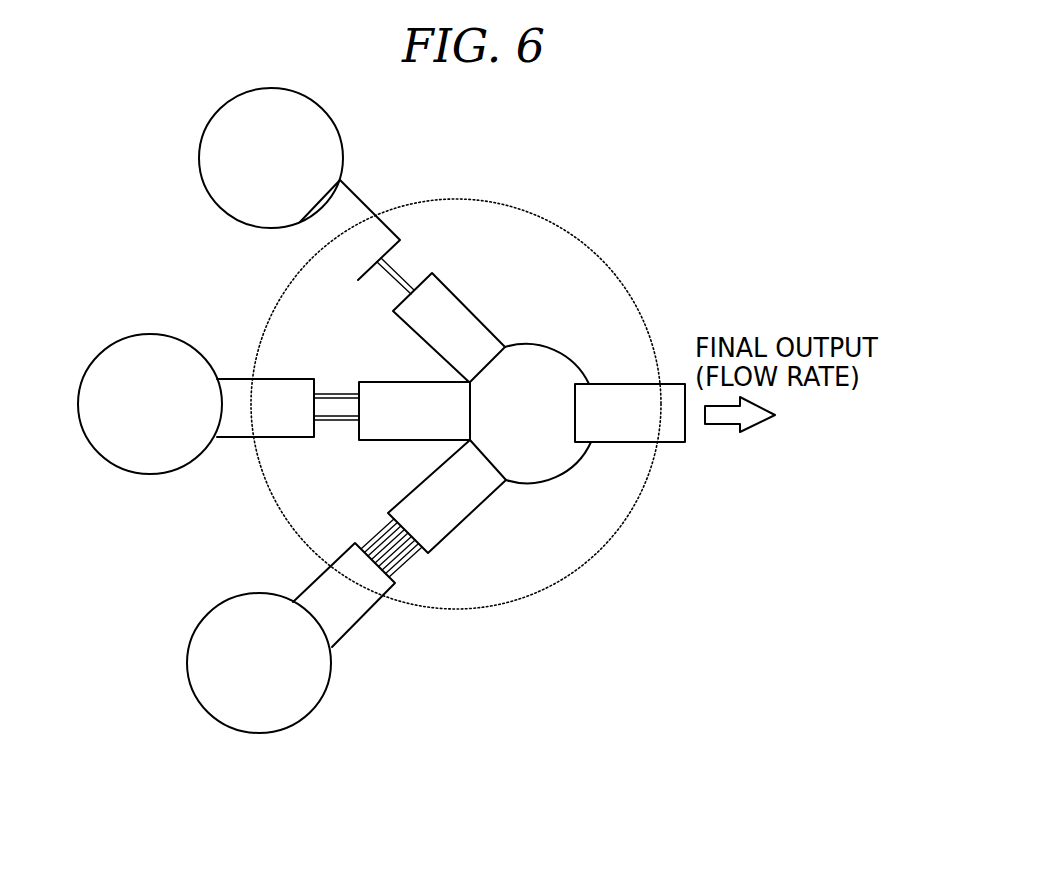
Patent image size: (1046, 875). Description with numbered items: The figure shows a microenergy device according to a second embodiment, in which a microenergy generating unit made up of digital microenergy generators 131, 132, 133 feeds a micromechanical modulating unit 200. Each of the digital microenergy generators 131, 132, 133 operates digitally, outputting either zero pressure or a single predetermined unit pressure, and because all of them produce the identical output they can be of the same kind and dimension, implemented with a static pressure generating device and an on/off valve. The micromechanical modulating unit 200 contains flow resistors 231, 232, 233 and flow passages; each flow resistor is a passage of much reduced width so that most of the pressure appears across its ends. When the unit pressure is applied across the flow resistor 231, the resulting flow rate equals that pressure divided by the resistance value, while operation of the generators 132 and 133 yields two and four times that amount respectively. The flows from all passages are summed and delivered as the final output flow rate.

The digital microenergy generator 131 is at (199, 141).
The digital microenergy generator 132 is at (178, 440).
The digital microenergy generator 133 is at (187, 682).
The micromechanical modulating unit 200 is at (560, 237).
The flow resistor 231 is at (441, 313).
The flow resistor 232 is at (392, 395).
The flow resistor 233 is at (433, 521).